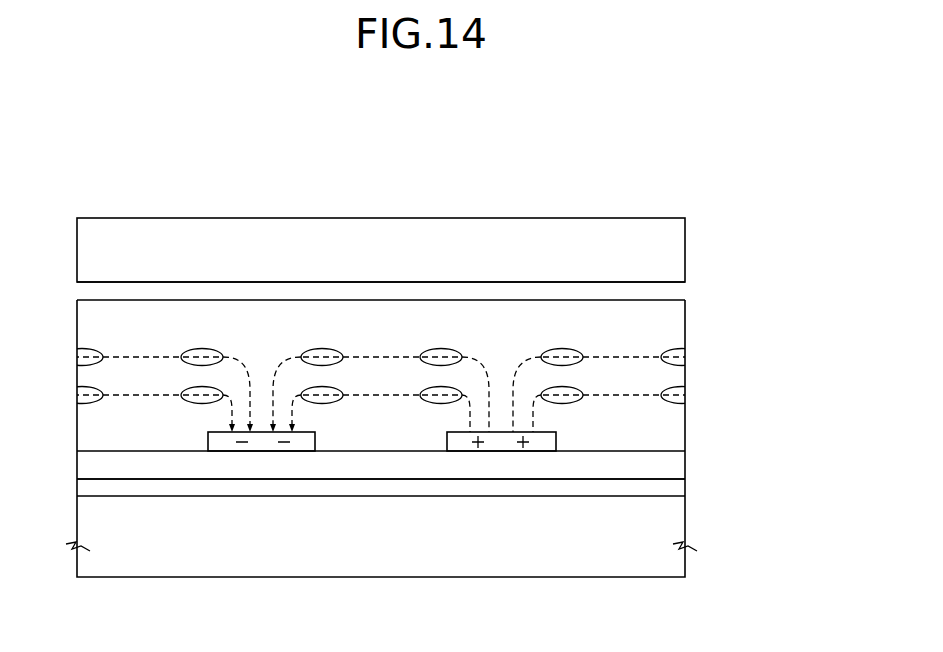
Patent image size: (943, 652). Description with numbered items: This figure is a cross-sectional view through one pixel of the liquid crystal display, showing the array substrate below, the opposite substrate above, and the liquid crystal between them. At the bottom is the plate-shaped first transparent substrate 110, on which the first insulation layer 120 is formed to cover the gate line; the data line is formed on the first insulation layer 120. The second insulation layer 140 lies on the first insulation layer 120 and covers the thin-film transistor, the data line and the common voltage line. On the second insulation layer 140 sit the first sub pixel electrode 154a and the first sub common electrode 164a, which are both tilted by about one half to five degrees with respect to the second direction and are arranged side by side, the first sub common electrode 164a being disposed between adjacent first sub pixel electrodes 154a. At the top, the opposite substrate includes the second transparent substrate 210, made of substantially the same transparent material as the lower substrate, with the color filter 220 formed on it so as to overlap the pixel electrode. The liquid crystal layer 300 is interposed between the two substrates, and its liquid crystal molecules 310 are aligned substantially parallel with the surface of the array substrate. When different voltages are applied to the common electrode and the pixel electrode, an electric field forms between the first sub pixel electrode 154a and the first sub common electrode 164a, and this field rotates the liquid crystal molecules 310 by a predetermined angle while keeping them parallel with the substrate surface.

The first transparent substrate 110 is at (679, 564).
The first insulation layer 120 is at (679, 485).
The second insulation layer 140 is at (679, 462).
The first sub pixel electrode 154a is at (264, 445).
The first sub common electrode 164a is at (545, 442).
The second transparent substrate 210 is at (678, 250).
The color filter 220 is at (679, 292).
The liquid crystal layer 300 is at (657, 374).
The liquid crystal molecules 310 is at (562, 353).